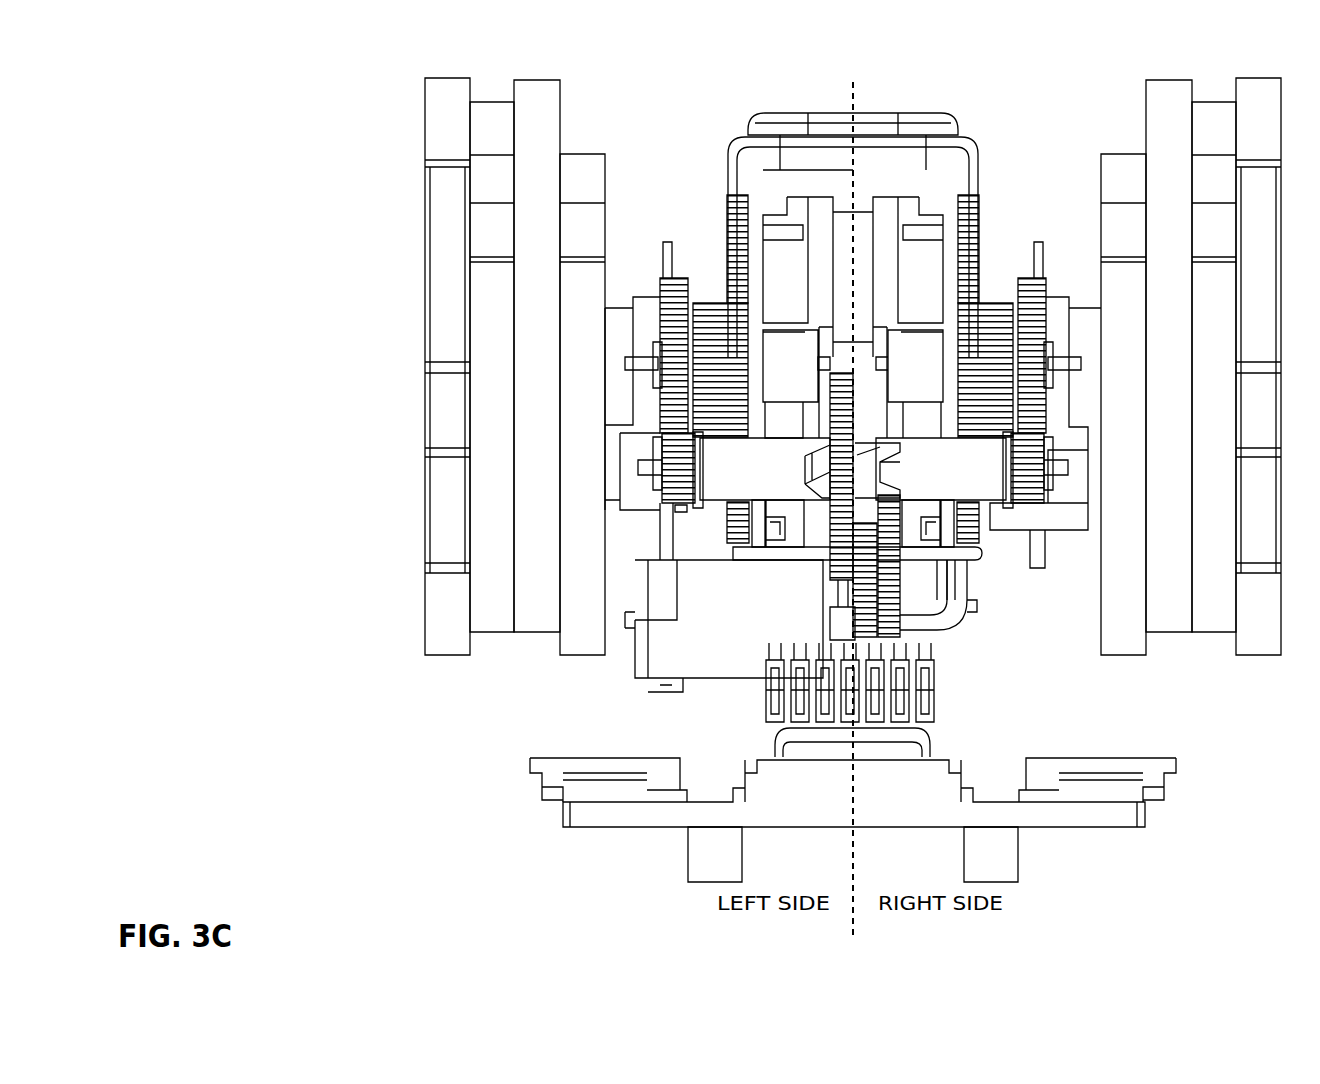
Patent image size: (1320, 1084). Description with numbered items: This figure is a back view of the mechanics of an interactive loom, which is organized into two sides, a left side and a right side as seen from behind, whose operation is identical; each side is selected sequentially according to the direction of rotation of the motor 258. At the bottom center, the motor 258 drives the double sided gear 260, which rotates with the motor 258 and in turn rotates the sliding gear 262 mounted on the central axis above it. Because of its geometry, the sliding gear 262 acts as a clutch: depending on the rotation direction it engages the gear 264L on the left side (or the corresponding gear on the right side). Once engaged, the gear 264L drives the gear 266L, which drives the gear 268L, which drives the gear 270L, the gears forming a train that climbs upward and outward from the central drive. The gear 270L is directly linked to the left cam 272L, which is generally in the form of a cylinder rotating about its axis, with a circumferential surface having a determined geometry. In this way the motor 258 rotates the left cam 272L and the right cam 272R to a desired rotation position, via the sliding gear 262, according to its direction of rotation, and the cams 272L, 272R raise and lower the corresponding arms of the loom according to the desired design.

The motor 258 is at (735, 680).
The double sided gear 260 is at (900, 598).
The sliding gear 262 is at (833, 568).
The gear 264L is at (705, 505).
The gear 266L is at (658, 285).
The gear 268L is at (712, 293).
The gear 270L is at (725, 213).
The left cam 272L is at (800, 197).
The right cam 272R is at (907, 197).